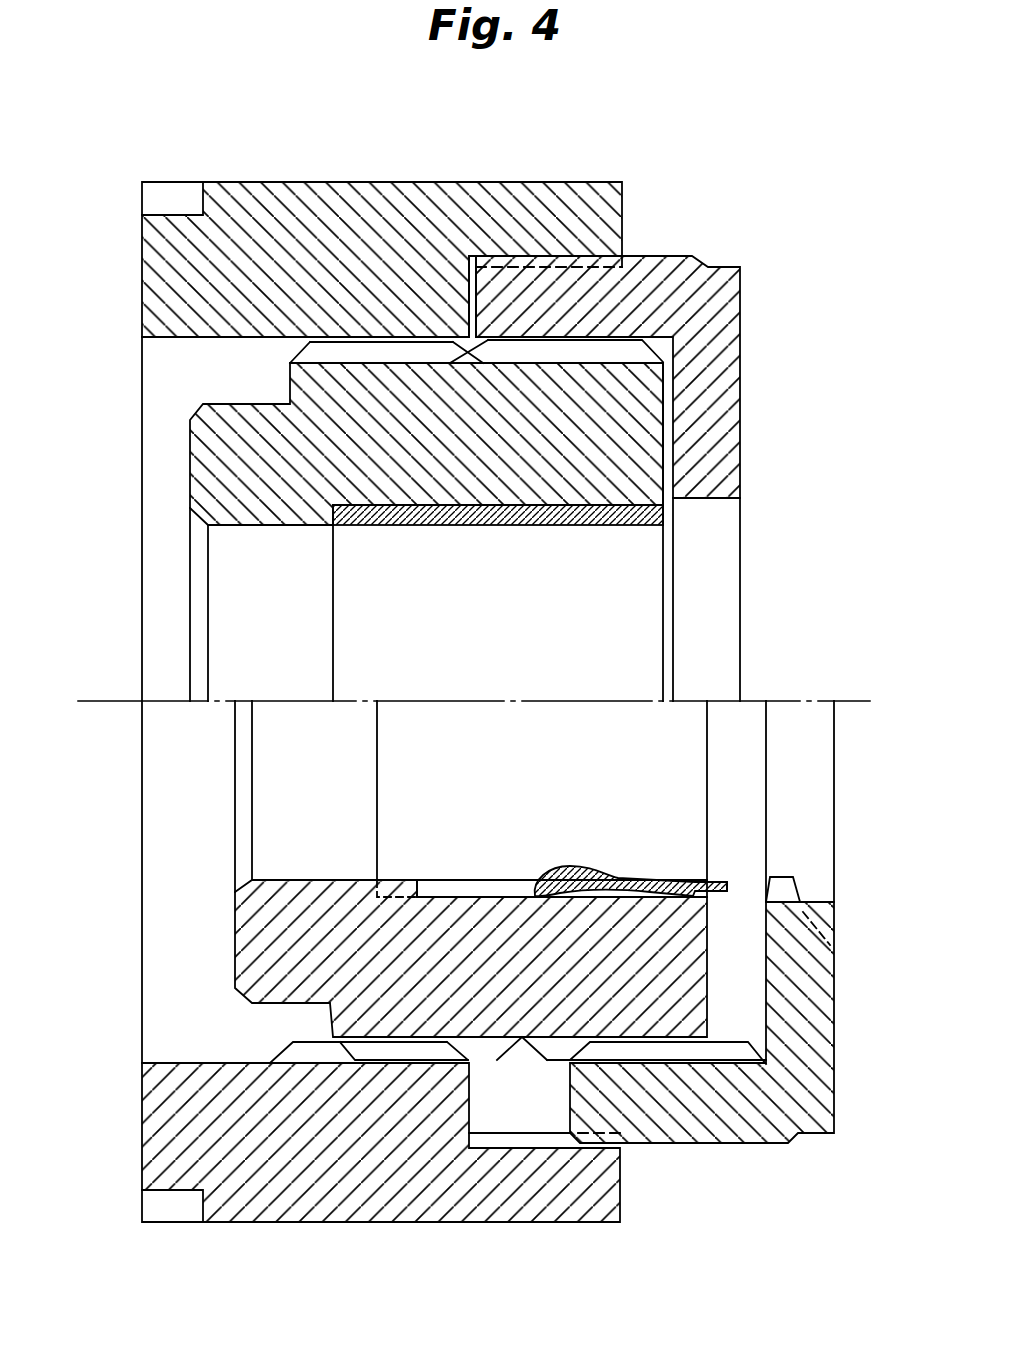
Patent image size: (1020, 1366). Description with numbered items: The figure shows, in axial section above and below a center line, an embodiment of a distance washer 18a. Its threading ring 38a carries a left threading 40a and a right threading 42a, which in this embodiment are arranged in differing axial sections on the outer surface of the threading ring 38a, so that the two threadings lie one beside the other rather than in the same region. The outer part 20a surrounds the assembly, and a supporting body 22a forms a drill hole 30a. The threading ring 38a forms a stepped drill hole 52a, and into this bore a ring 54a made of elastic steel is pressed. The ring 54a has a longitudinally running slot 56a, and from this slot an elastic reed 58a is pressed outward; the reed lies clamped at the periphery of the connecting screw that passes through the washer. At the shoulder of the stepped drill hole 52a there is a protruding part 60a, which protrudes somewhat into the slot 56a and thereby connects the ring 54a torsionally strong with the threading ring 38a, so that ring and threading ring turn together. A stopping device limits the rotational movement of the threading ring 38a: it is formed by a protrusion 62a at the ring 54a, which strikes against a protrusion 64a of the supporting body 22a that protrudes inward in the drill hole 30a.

The distance washer 18a is at (746, 188).
The outer ring 20a is at (362, 178).
The supporting body 22a is at (748, 285).
The drill hole 30a is at (710, 503).
The threading ring 38a is at (205, 455).
The left threading 40a is at (293, 348).
The right threading 42a is at (622, 350).
The stepped drill hole 52a is at (262, 527).
The ring 54a is at (467, 527).
The slot 56a is at (472, 892).
The elastic reed 58a is at (577, 868).
The protruding part 60a is at (398, 882).
The protrusion 62a is at (715, 878).
The protrusion 64a is at (778, 887).